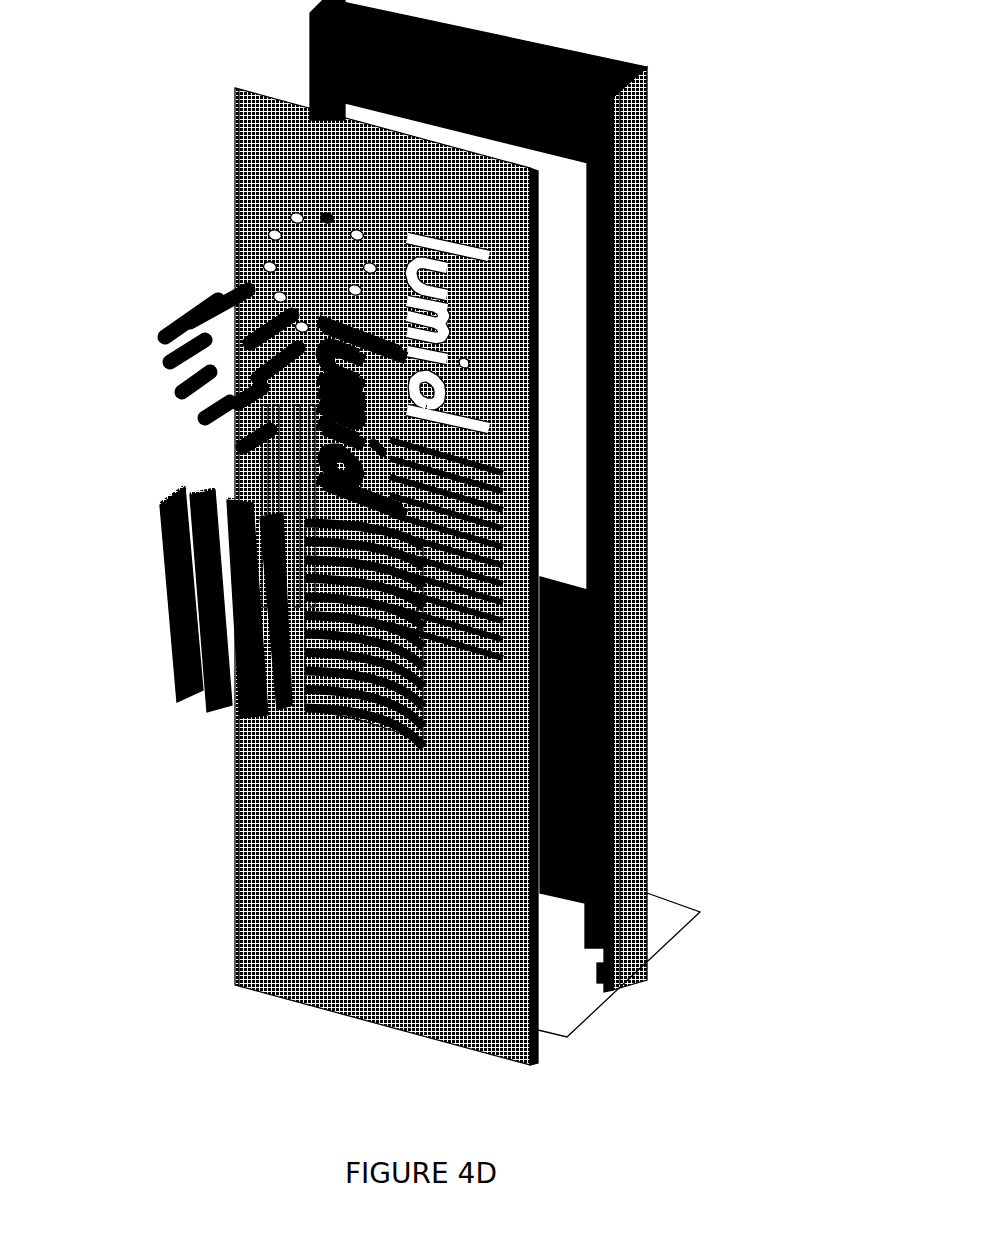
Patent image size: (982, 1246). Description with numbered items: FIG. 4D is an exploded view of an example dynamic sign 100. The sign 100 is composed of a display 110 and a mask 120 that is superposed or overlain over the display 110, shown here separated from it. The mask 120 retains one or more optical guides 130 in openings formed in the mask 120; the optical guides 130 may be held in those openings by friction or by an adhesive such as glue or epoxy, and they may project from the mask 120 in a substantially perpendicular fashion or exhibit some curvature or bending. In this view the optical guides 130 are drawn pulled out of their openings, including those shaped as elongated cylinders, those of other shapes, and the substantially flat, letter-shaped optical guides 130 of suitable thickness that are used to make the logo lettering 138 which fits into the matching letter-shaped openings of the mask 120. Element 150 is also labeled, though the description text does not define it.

The dynamic sign 100 is at (429, 532).
The display 110 is at (580, 177).
The mask 120 is at (522, 252).
The optical guides 130 is at (300, 665).
The logo lettering 138 is at (377, 423).
The frame side rail 150 is at (310, 57).